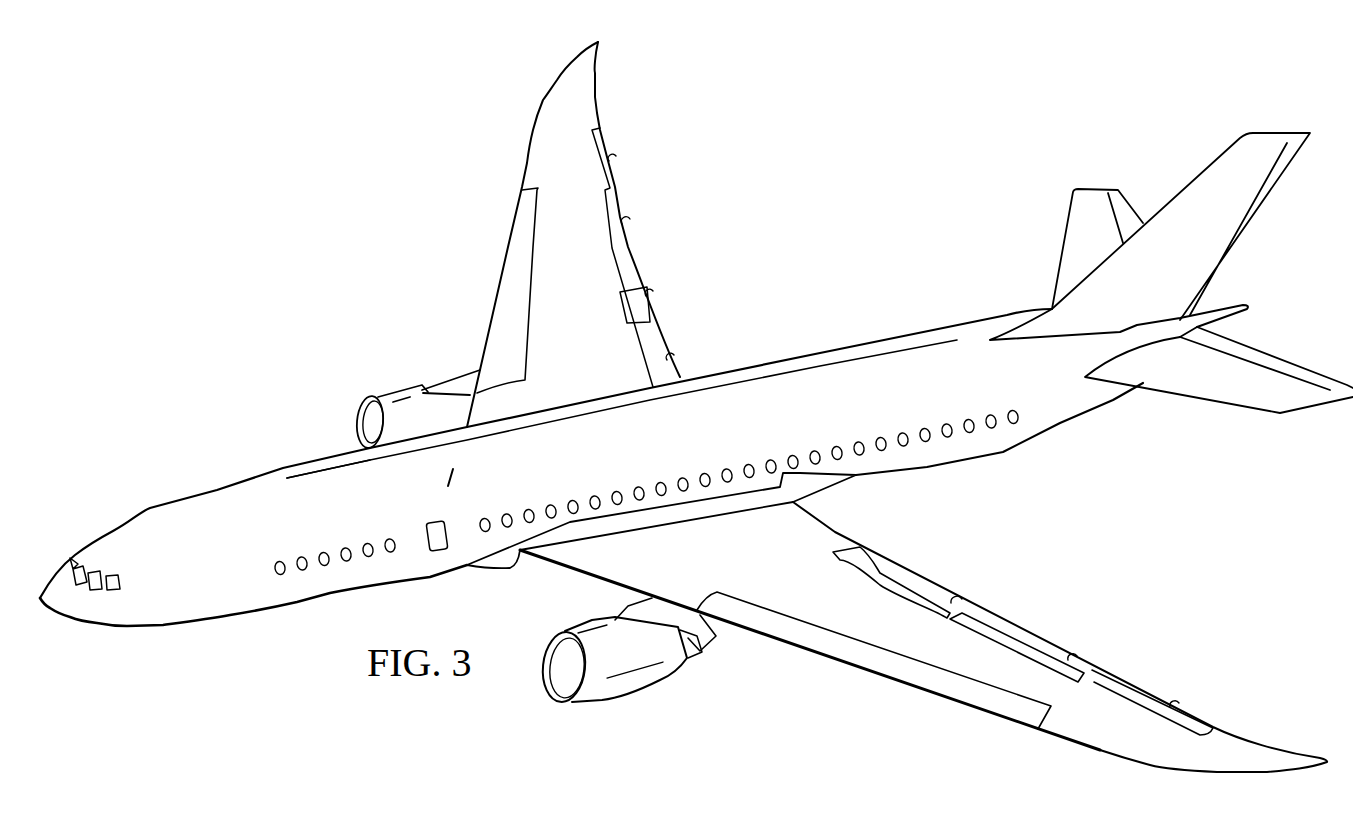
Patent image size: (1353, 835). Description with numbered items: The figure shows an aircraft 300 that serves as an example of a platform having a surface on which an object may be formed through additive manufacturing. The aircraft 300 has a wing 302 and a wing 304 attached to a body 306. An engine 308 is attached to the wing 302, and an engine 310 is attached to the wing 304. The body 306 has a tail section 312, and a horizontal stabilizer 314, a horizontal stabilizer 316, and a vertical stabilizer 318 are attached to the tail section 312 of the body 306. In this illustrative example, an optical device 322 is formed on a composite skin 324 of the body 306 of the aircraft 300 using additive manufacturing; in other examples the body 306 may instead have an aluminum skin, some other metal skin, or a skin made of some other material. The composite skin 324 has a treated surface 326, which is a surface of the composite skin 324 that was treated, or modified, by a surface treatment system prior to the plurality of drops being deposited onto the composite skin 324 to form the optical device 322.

The aircraft 300 is at (429, 267).
The wing 302 is at (598, 78).
The wing 304 is at (1178, 775).
The body 306 is at (162, 502).
The engine 308 is at (397, 382).
The engine 310 is at (632, 690).
The tail section 312 is at (1130, 440).
The horizontal stabilizer 314 is at (1062, 245).
The horizontal stabilizer 316 is at (1228, 403).
The vertical stabilizer 318 is at (1257, 215).
The optical device 322 is at (447, 479).
The composite skin 324 is at (274, 487).
The treated surface 326 is at (590, 412).